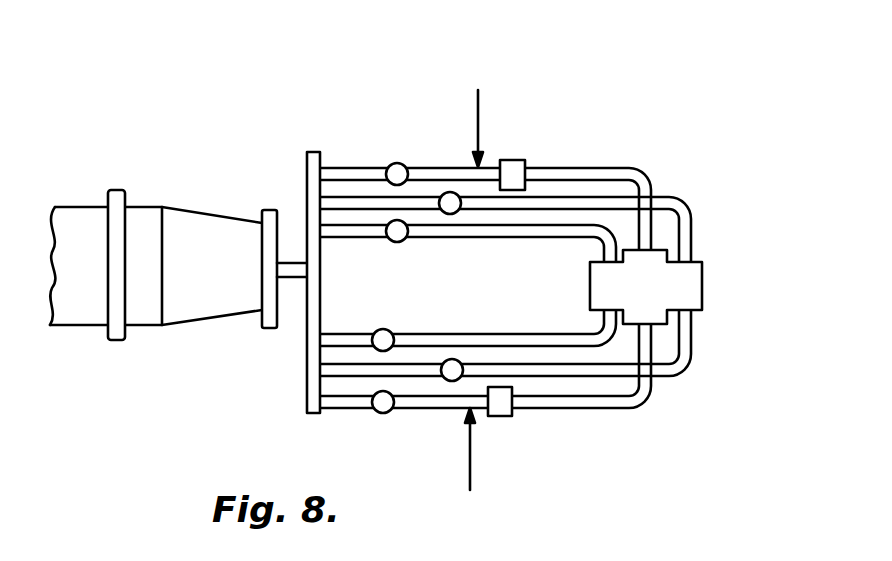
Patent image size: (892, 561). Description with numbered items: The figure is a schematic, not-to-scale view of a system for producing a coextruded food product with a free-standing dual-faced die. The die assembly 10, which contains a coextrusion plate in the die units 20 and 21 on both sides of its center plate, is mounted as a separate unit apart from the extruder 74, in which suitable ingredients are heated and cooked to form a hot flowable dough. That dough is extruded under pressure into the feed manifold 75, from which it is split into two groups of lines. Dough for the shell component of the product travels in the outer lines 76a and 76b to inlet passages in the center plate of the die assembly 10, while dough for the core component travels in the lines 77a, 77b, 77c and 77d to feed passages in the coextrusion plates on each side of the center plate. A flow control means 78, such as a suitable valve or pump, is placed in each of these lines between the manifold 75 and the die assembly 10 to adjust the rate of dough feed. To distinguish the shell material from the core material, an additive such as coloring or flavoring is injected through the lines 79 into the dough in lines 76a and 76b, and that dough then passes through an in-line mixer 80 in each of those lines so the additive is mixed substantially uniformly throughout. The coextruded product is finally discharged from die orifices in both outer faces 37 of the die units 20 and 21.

The die assembly 10 is at (722, 246).
The die unit 20 is at (650, 299).
The die unit 21 is at (582, 312).
The outer face 37 is at (590, 284).
The extruder 74 is at (148, 285).
The feed manifold 75 is at (307, 178).
The line 76a is at (333, 168).
The line 76b is at (348, 410).
The line 77a is at (662, 198).
The line 77b is at (676, 378).
The line 77c is at (522, 238).
The line 77d is at (503, 323).
The flow control means 78 is at (404, 165).
The additive injection line 79 is at (481, 106).
The in-line mixer 80 is at (524, 160).